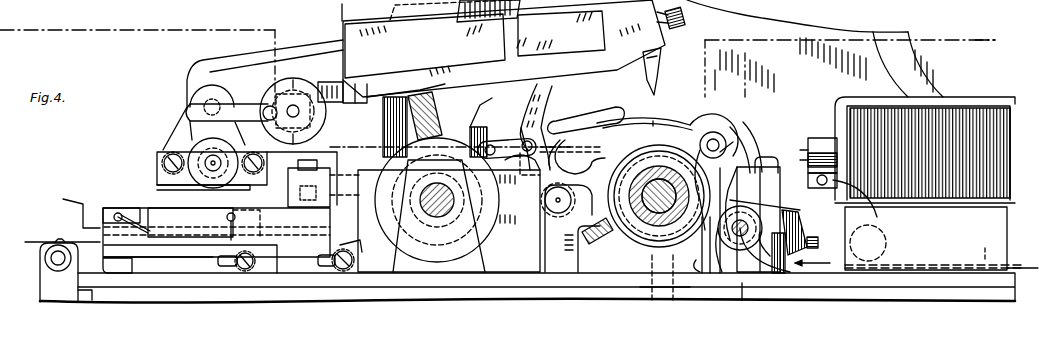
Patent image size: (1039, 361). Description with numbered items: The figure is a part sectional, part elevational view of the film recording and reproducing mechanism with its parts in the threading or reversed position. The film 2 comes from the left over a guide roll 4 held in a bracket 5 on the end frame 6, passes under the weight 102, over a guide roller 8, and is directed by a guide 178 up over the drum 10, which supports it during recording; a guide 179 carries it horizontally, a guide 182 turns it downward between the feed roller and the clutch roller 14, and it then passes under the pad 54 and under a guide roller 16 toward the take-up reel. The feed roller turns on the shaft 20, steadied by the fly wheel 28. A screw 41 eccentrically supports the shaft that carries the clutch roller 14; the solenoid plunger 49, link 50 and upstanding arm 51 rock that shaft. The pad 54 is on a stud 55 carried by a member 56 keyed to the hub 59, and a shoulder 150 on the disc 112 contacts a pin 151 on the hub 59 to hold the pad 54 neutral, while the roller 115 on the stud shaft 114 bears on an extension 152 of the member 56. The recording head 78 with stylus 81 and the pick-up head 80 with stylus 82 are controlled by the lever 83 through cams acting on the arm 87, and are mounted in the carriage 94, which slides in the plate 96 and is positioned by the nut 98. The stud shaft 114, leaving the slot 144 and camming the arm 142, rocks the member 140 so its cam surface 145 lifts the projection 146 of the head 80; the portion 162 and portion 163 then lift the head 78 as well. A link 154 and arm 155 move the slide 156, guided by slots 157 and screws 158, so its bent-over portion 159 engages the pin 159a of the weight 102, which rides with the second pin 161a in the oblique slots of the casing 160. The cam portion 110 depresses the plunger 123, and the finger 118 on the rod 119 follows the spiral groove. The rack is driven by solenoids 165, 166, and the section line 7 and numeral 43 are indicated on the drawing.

The film 2 is at (52, 232).
The guide roll 4 is at (44, 258).
The bracket 5 is at (38, 286).
The end frame 6 is at (78, 297).
The section line 7 is at (745, 88).
The guide roller 8 is at (292, 184).
The drum 10 is at (488, 238).
The clutch roller 14 is at (745, 205).
The guide roller 16 is at (888, 241).
The shaft 20 is at (650, 240).
The fly wheel 28 is at (935, 78).
The screw 41 is at (790, 272).
The idler roller 43 is at (570, 180).
The plunger 49 is at (878, 217).
The link 50 is at (788, 172).
The upstanding arm 51 is at (772, 158).
The pad 54 is at (810, 236).
The stud 55 is at (803, 230).
The member 56 is at (773, 210).
The hub 59 is at (790, 170).
The recording head 78 is at (343, 33).
The pick-up head 80 is at (664, 40).
The stylus 81 is at (432, 118).
The stylus 82 is at (660, 76).
The lever 83 is at (185, 112).
The arm 87 is at (312, 122).
The carriage 94 is at (190, 130).
The plate 96 is at (190, 130).
The nut 98 is at (190, 168).
The weight 102 is at (80, 204).
The cam portion 110 is at (705, 248).
The disc 112 is at (668, 128).
The stud shaft 114 is at (716, 135).
The roller 115 is at (705, 130).
The finger 118 is at (604, 244).
The rod 119 is at (584, 232).
The plunger 123 is at (652, 285).
The member 140 is at (548, 120).
The arm 142 is at (600, 118).
The slot 144 is at (585, 158).
The cam surface 145 is at (545, 85).
The projection 146 is at (548, 88).
The shoulder 150 is at (700, 270).
The pin 151 is at (760, 272).
The extension 152 is at (748, 138).
The link 154 is at (525, 172).
The arm 155 is at (437, 147).
The slide 156 is at (350, 252).
The slots 157 is at (230, 262).
The screws 158 is at (247, 269).
The bent-over portion 159 is at (215, 220).
The pin 159a is at (232, 207).
The casing 160 is at (117, 207).
The second pin 161a is at (118, 212).
The downwardly projecting portion 162 is at (363, 80).
The portion 163 is at (356, 102).
The solenoid 165 is at (995, 200).
The solenoid 166 is at (940, 200).
The guide 178 is at (405, 236).
The guide 179 is at (512, 140).
The guide 182 is at (733, 142).